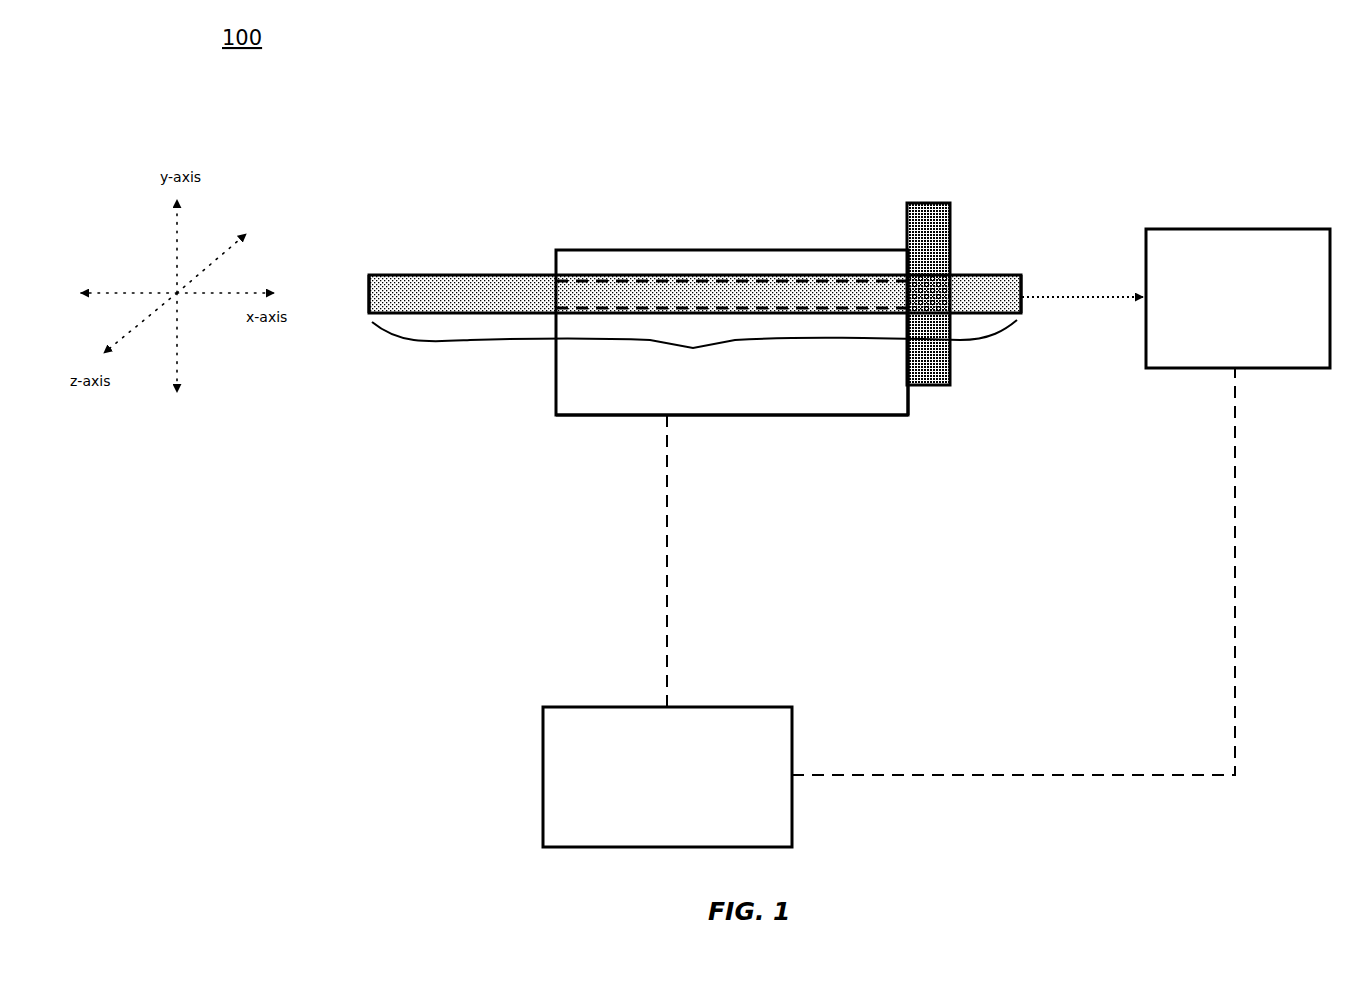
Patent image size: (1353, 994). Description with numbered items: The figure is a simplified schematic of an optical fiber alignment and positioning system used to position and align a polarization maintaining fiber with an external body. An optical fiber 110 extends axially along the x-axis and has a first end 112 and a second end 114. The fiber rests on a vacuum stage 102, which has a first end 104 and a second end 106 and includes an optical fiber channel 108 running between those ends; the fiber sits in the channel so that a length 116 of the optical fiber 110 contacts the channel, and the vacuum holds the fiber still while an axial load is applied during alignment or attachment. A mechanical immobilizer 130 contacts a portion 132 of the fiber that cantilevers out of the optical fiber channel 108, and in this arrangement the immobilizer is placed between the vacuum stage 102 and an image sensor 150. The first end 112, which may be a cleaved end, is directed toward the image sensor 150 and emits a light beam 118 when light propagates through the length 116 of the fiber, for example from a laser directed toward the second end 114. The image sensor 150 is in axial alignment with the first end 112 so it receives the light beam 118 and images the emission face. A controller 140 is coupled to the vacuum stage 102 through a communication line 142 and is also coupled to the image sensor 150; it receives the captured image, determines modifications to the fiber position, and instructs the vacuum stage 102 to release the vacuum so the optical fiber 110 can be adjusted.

The vacuum stage 102 is at (853, 418).
The first end 104 is at (910, 412).
The second end 106 is at (556, 400).
The optical fiber channel 108 is at (755, 278).
The optical fiber 110 is at (505, 275).
The first end 112 is at (1022, 277).
The second end 114 is at (369, 285).
The length 116 is at (694, 352).
The light beam 118 is at (1062, 300).
The mechanical immobilizer 130 is at (932, 203).
The portion 132 is at (950, 288).
The controller 140 is at (620, 707).
The communication line 142 is at (667, 480).
The image sensor 150 is at (1222, 229).